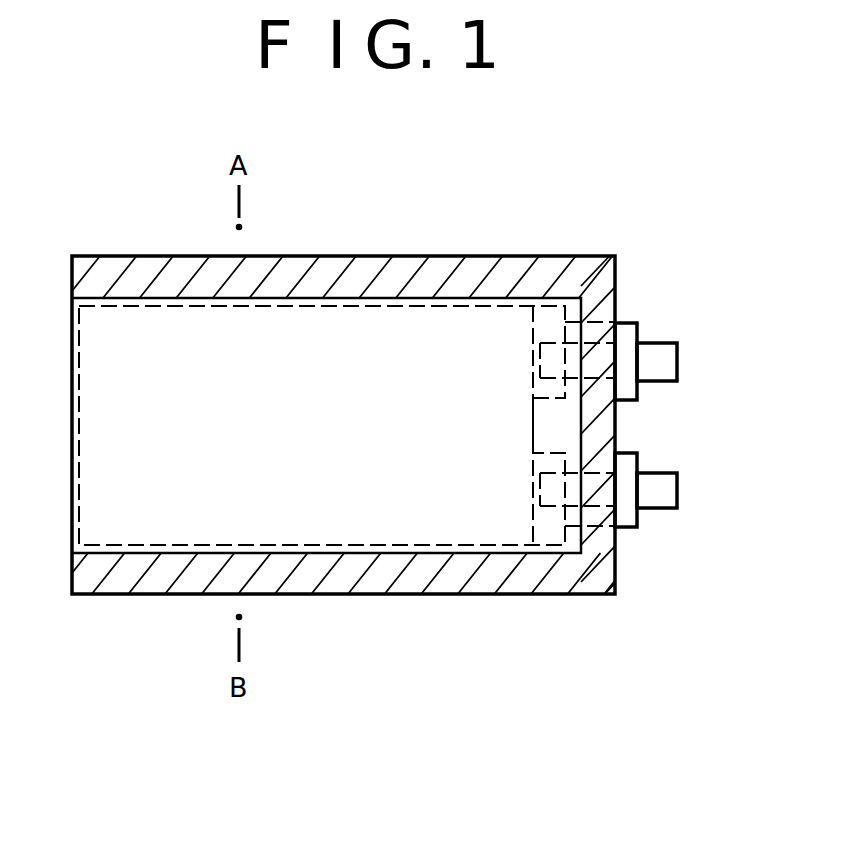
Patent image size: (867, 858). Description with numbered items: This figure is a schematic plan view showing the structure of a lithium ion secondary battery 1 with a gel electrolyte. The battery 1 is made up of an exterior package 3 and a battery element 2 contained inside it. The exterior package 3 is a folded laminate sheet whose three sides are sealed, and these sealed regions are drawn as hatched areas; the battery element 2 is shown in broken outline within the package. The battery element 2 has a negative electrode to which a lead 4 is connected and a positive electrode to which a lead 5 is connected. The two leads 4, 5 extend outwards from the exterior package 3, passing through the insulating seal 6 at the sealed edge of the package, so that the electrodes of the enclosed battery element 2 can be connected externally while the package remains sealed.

The lithium ion secondary battery 1 is at (122, 222).
The battery element 2 is at (340, 533).
The exterior package 3 is at (438, 578).
The lead 4 is at (668, 360).
The lead 5 is at (668, 490).
The insulating seal 6 is at (627, 389).